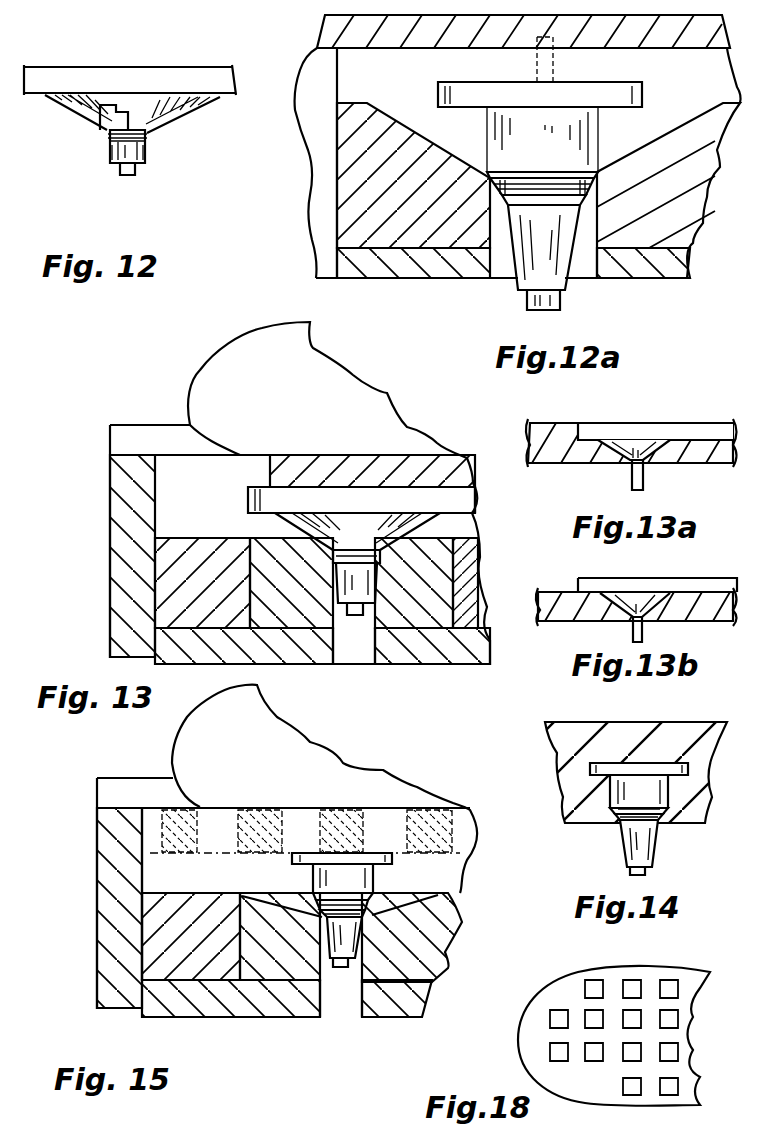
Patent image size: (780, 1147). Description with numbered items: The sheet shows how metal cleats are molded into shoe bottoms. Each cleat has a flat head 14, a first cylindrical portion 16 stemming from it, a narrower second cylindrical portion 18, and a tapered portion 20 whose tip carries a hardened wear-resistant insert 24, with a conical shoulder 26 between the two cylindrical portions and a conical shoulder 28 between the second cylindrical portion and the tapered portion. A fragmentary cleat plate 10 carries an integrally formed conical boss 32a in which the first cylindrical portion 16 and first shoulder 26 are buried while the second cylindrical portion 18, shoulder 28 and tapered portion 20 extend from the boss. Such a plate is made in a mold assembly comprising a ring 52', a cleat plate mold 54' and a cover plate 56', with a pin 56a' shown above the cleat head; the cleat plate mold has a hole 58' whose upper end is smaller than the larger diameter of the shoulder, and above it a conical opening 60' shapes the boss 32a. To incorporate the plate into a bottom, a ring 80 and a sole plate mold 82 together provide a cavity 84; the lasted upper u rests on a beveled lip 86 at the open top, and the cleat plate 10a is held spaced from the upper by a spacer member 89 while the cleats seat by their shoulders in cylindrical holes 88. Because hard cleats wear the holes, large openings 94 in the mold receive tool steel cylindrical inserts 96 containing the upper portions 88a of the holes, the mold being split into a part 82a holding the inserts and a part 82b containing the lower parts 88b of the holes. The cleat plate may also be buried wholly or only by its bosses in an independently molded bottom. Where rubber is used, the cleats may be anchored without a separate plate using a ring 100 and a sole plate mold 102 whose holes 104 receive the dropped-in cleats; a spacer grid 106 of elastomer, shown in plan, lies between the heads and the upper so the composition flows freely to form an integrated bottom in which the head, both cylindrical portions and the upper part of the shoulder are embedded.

In FIG. 12, the cleat plate 10 is at (167, 78).
In FIG. 13A, the cleat plate 10 is at (683, 414).
In FIG. 13B, the cleat plate 10 is at (715, 588).
In FIG. 13, the cleat plate 10a is at (250, 510).
In FIG. 14, the flat head 14 is at (610, 762).
In FIG. 15, the flat head 14 is at (405, 862).
In FIG. 12, the first cylindrical portion 16 is at (90, 120).
In FIG. 12A, the first cylindrical portion 16 is at (487, 132).
In FIG. 13, the first cylindrical portion 16 is at (356, 582).
In FIG. 14, the first cylindrical portion 16 is at (639, 785).
In FIG. 15, the first cylindrical portion 16 is at (342, 873).
In FIG. 12, the second cylindrical portion 18 is at (150, 135).
In FIG. 12A, the second cylindrical portion 18 is at (490, 186).
In FIG. 14, the second cylindrical portion 18 is at (668, 826).
In FIG. 15, the second cylindrical portion 18 is at (372, 900).
In FIG. 12, the tapered portion 20 is at (115, 170).
In FIG. 12A, the tapered portion 20 is at (527, 278).
In FIG. 14, the tapered portion 20 is at (652, 862).
In FIG. 15, the tapered portion 20 is at (301, 936).
In FIG. 12, the hardened wear-resistant insert 24 is at (128, 178).
In FIG. 12, the conical shoulder 26 is at (103, 135).
In FIG. 12A, the conical shoulder 26 is at (487, 176).
In FIG. 14, the conical shoulder 26 is at (615, 818).
In FIG. 15, the conical shoulder 26 is at (313, 902).
In FIG. 12, the conical shoulder 28 is at (153, 147).
In FIG. 12A, the conical shoulder 28 is at (588, 200).
In FIG. 14, the conical shoulder 28 is at (620, 825).
In FIG. 15, the conical shoulder 28 is at (412, 937).
In FIG. 12, the conical boss 32a is at (183, 103).
In FIG. 13, the conical boss 32a is at (357, 531).
In FIG. 13A, the conical boss 32a is at (600, 465).
In FIG. 12A, the ring 52' is at (369, 177).
In FIG. 12A, the cleat plate mold 54' is at (413, 286).
In FIG. 12A, the cover plate 56' is at (490, 29).
In FIG. 12A, the pin 56a' is at (586, 59).
In FIG. 12A, the hole 58' is at (639, 281).
In FIG. 12A, the conical opening 60' is at (669, 162).
In FIG. 13, the ring 80 is at (110, 610).
In FIG. 13, the sole plate mold 82 is at (457, 676).
In FIG. 13, the sole plate mold part 82a is at (470, 557).
In FIG. 13, the sole plate mold part 82b is at (490, 640).
In FIG. 13, the cavity 84 is at (150, 512).
In FIG. 13, the beveled lip 86 is at (140, 437).
In FIG. 13, the cylindrical holes 88 is at (358, 645).
In FIG. 13, the upper portion of hole 88a is at (414, 583).
In FIG. 13, the lower part of hole 88b is at (343, 666).
In FIG. 13, the spacer member 89 is at (272, 475).
In FIG. 13, the large openings 94 is at (468, 576).
In FIG. 13, the cylindrical inserts 96 is at (291, 583).
In FIG. 15, the ring 100 is at (97, 895).
In FIG. 15, the sole plate mold 102 is at (232, 1005).
In FIG. 15, the holes 104 is at (340, 1007).
In FIG. 15, the spacer grid 106 is at (318, 824).
In FIG. 18, the spacer grid 106 is at (585, 968).
In FIG. 13, the upper u is at (203, 372).